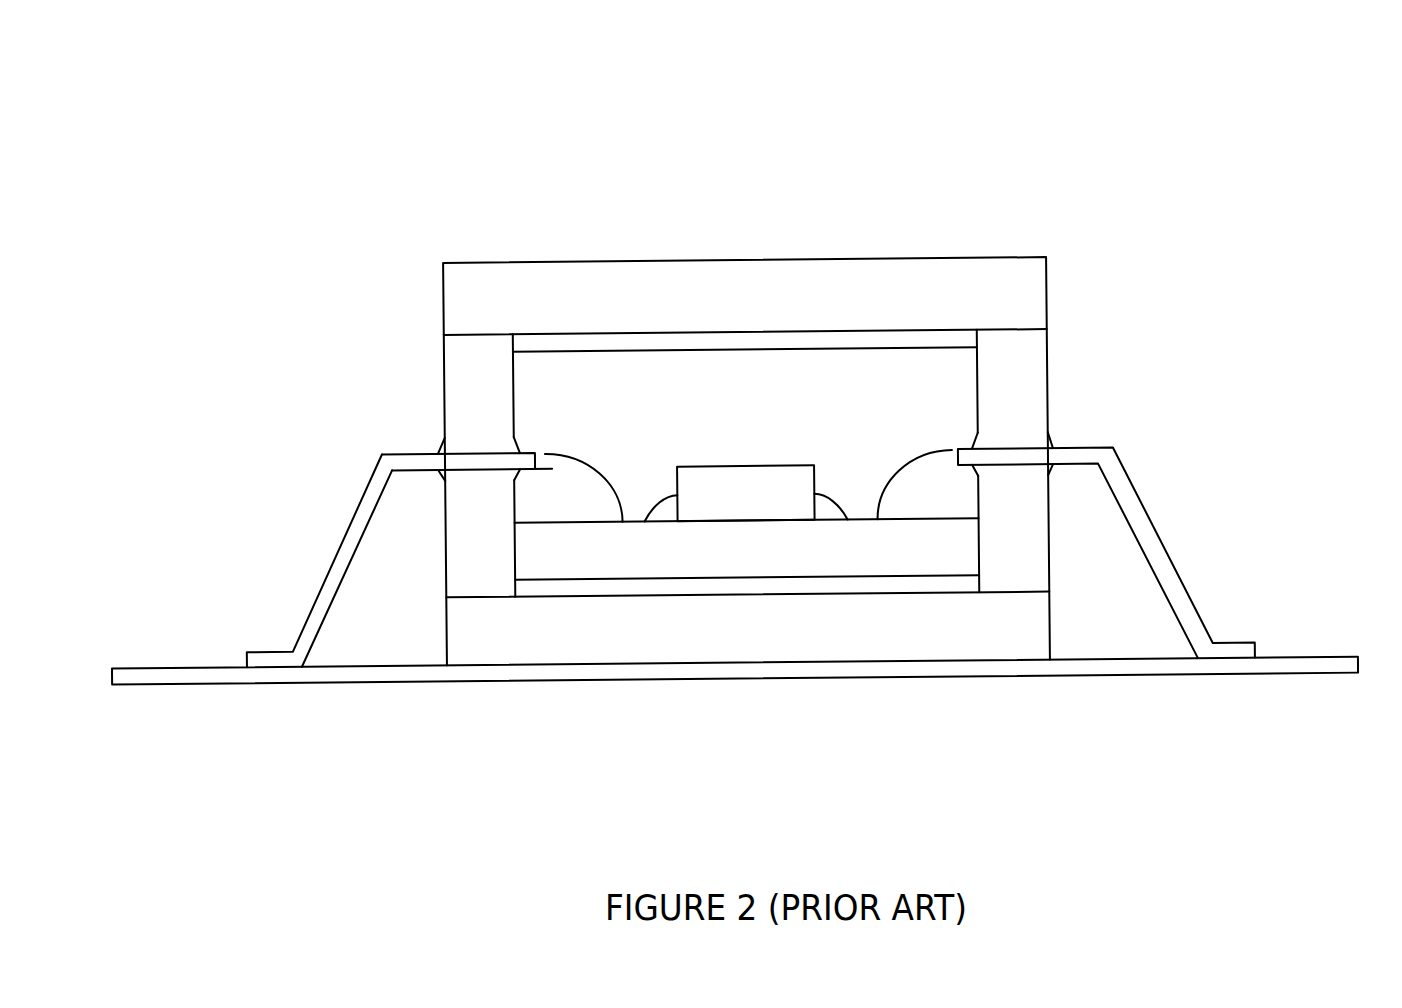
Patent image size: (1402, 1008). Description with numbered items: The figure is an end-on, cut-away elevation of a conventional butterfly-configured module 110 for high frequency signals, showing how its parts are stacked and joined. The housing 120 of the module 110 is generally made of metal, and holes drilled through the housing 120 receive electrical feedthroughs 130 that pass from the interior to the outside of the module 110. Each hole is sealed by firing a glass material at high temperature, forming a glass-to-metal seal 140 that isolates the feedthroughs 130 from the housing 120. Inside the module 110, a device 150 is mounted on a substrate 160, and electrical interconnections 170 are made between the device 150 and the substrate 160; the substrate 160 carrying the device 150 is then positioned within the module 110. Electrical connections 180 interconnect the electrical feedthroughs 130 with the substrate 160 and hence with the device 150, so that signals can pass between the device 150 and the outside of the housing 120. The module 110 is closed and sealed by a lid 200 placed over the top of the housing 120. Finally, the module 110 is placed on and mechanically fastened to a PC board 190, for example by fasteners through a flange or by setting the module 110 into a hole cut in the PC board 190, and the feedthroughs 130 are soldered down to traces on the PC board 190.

The module 110 is at (1056, 218).
The housing 120 is at (1038, 366).
The electrical feedthroughs 130 is at (342, 559).
The glass-to-metal seal 140 is at (1035, 443).
The device 150 is at (778, 507).
The substrate 160 is at (755, 565).
The electrical interconnections 170 is at (830, 497).
The electrical connections 180 is at (552, 465).
The PC board 190 is at (1303, 667).
The lid 200 is at (745, 268).